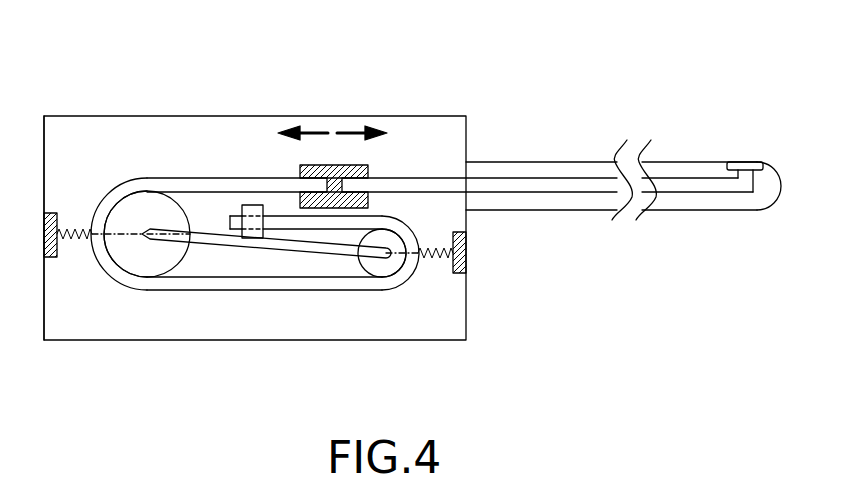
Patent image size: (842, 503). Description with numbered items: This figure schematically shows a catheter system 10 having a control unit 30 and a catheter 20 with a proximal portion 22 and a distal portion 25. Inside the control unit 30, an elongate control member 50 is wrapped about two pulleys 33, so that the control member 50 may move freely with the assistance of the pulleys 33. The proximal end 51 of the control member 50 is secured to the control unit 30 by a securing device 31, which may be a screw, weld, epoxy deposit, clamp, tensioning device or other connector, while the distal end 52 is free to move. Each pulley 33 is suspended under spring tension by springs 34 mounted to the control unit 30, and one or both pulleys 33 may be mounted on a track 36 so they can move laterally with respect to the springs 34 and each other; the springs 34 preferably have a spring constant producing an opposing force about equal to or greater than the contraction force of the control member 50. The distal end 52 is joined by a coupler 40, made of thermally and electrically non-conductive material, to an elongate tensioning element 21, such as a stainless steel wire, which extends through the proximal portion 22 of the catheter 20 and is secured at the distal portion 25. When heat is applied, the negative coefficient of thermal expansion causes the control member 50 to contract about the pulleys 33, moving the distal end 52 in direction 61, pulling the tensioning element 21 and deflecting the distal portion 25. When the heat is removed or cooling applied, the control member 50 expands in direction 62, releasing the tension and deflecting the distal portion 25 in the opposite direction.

The catheter system 10 is at (157, 430).
The catheter 20 is at (612, 305).
The elongate tensioning element 21 is at (438, 193).
The proximal portion 22 is at (507, 162).
The distal portion 25 is at (740, 212).
The control unit 30 is at (223, 340).
The securing device 31 is at (247, 240).
The pulleys 33 is at (140, 260).
The springs 34 is at (75, 243).
The track 36 is at (298, 250).
The coupler 40 is at (367, 198).
The control member 50 is at (207, 180).
The proximal end 51 is at (97, 180).
The distal end 52 is at (300, 185).
The direction 61 is at (300, 149).
The direction 62 is at (365, 149).